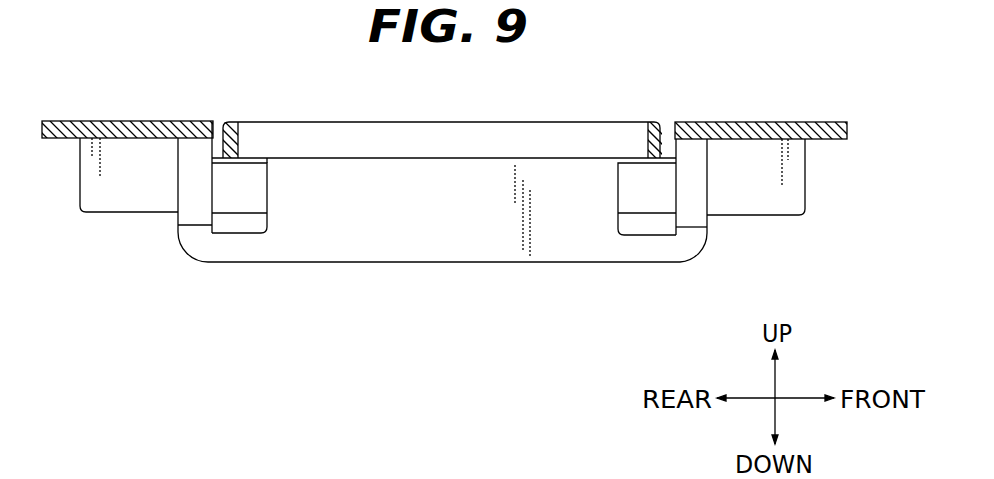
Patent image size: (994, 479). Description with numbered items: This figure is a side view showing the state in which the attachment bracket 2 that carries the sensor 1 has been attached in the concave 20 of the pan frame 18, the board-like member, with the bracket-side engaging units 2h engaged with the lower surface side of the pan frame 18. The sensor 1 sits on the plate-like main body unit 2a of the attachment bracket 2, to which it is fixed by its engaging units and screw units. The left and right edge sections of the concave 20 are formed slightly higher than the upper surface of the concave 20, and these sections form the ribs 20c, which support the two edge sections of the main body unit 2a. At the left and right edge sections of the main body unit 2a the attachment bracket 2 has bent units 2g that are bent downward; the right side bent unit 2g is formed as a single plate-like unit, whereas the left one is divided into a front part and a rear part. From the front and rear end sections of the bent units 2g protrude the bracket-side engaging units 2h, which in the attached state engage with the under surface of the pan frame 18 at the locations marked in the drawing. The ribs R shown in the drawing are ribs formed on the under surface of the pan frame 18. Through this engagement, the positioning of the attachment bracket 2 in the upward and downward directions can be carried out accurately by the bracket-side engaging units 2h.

The sensor 1 is at (447, 200).
The attachment bracket 2 is at (392, 266).
The plate-like main body unit 2a is at (652, 170).
The bent unit 2g is at (450, 222).
The bracket-side engaging unit 2h is at (210, 252).
The pan frame 18 is at (73, 122).
The concave 20 is at (607, 121).
The rib 20c is at (240, 182).
The rib R is at (195, 167).